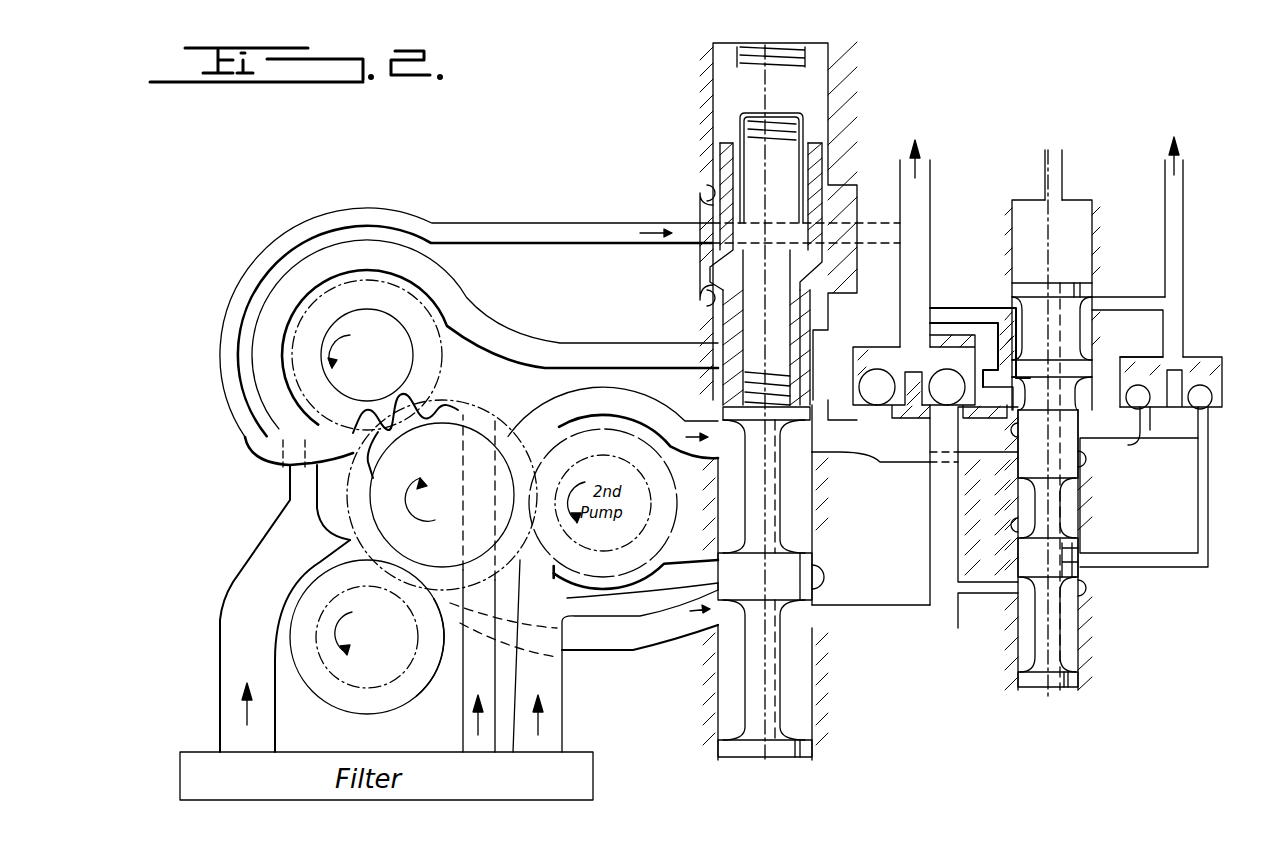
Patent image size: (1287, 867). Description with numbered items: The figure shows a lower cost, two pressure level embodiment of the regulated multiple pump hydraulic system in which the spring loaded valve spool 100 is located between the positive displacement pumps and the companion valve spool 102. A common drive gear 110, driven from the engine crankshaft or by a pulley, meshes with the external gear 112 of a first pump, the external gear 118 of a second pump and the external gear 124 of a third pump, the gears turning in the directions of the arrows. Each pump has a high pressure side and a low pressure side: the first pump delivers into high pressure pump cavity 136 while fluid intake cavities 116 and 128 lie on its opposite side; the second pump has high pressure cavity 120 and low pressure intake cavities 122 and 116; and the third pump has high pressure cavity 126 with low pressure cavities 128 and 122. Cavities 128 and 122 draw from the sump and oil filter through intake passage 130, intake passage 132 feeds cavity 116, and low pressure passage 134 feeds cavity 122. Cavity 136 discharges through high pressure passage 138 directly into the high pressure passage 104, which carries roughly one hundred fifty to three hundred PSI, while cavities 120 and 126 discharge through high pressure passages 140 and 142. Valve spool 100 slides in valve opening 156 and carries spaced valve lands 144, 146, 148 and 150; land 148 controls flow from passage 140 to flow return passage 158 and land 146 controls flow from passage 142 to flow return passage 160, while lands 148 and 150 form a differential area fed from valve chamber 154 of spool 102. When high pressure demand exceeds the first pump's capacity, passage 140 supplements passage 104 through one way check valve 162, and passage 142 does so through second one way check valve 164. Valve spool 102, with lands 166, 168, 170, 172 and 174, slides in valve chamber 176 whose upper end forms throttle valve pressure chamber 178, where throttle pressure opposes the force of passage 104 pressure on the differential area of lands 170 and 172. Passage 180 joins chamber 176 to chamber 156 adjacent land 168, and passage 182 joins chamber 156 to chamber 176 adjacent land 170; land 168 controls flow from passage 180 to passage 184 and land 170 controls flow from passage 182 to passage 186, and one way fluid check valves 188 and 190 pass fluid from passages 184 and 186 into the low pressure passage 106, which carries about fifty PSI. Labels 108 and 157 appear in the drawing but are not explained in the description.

The spring loaded valve spool 100 is at (773, 500).
The companion valve spool 102 is at (1062, 457).
The high pressure passage 104 is at (920, 184).
The low pressure passage 106 is at (1175, 215).
The flow passage 108 is at (512, 333).
The common drive gear 110 is at (508, 412).
The external gear of first pump 112 is at (385, 295).
The fluid intake cavity 116 is at (530, 347).
The external gear of second pump 118 is at (600, 433).
The high pressure cavity 120 is at (442, 492).
The low pressure intake cavity 122 is at (520, 567).
The external gear of third pump 124 is at (348, 675).
The high pressure cavity 126 is at (448, 620).
The fluid intake cavity 128 is at (283, 562).
The intake passage 130 is at (233, 668).
The intake passage 132 is at (487, 682).
The low pressure passage 134 is at (550, 714).
The high pressure pump cavity 136 is at (325, 431).
The high pressure passage 138 is at (612, 228).
The high pressure passage 140 is at (640, 403).
The high pressure passage 142 is at (682, 632).
The valve land 144 is at (797, 751).
The valve land 146 is at (823, 574).
The valve land 148 is at (815, 412).
The valve land 150 is at (822, 277).
The valve chamber 154 is at (1100, 300).
The valve opening 156 is at (720, 402).
The passage 157 is at (947, 300).
The flow return passage 158 is at (583, 347).
The flow return passage 160 is at (643, 600).
The one way check valve 162 is at (875, 377).
The second one way check valve 164 is at (953, 377).
The valve land 166 is at (1077, 678).
The valve land 168 is at (1067, 548).
The valve land 170 is at (1015, 431).
The valve land 172 is at (1045, 360).
The valve land 174 is at (1050, 290).
The valve chamber 176 is at (1015, 525).
The throttle valve pressure chamber 178 is at (1068, 247).
The passage 180 is at (983, 592).
The passage 182 is at (975, 460).
The passage 184 is at (1200, 487).
The passage 186 is at (1108, 440).
The one way fluid check valve 188 is at (1220, 393).
The one way fluid check valve 190 is at (1163, 436).